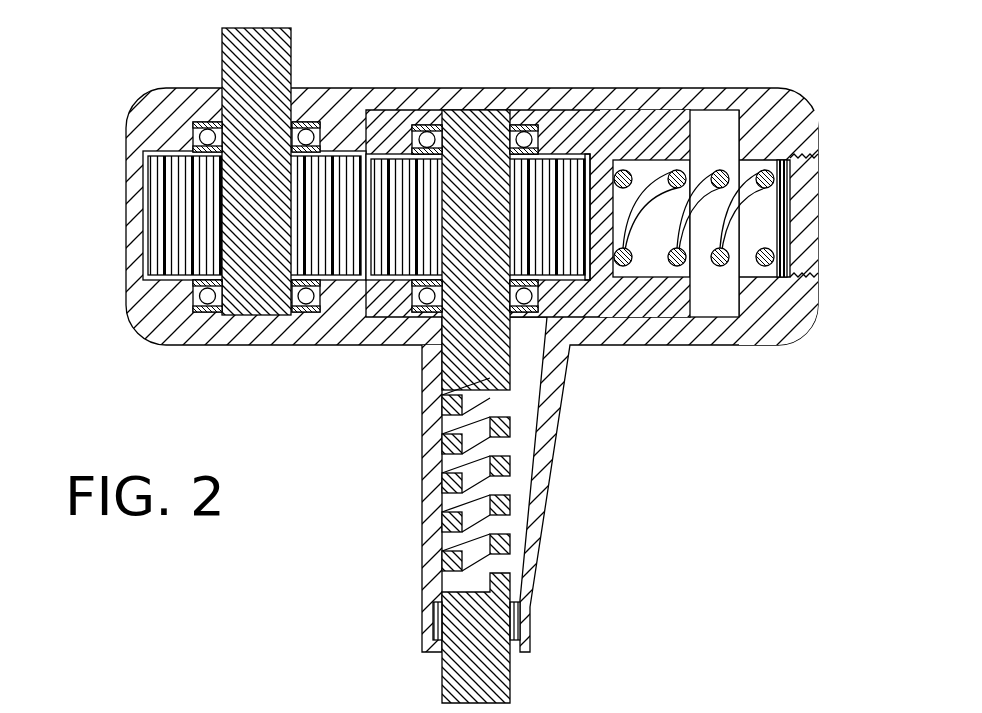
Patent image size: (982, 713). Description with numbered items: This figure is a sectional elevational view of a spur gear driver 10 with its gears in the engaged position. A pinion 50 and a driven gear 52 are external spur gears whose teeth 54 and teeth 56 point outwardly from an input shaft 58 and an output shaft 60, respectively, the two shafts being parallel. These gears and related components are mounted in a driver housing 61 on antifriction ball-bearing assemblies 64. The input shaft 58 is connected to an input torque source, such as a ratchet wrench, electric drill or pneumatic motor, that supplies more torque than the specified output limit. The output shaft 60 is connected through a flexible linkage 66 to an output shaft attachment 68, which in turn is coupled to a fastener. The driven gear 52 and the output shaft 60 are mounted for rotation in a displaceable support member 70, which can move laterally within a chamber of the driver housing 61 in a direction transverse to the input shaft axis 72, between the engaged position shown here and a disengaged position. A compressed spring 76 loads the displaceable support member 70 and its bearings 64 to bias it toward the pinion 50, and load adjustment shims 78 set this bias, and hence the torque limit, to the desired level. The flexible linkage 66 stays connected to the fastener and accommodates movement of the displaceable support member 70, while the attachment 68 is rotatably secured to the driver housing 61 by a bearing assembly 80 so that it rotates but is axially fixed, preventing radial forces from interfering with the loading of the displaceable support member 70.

The spur gear driver 10 is at (745, 418).
The pinion 50 is at (366, 140).
The driven gear 52 is at (530, 210).
The teeth 54 is at (160, 207).
The teeth 56 is at (573, 240).
The input shaft 58 is at (252, 65).
The output shaft 60 is at (465, 127).
The driver housing 61 is at (777, 120).
The ball-bearing assemblies 64 is at (412, 315).
The flexible linkage 66 is at (508, 473).
The output shaft attachment 68 is at (512, 697).
The displaceable support member 70 is at (613, 140).
The input shaft axis 72 is at (257, 712).
The compressed spring 76 is at (677, 258).
The load adjustment shims 78 is at (805, 222).
The bearing assembly 80 is at (434, 645).